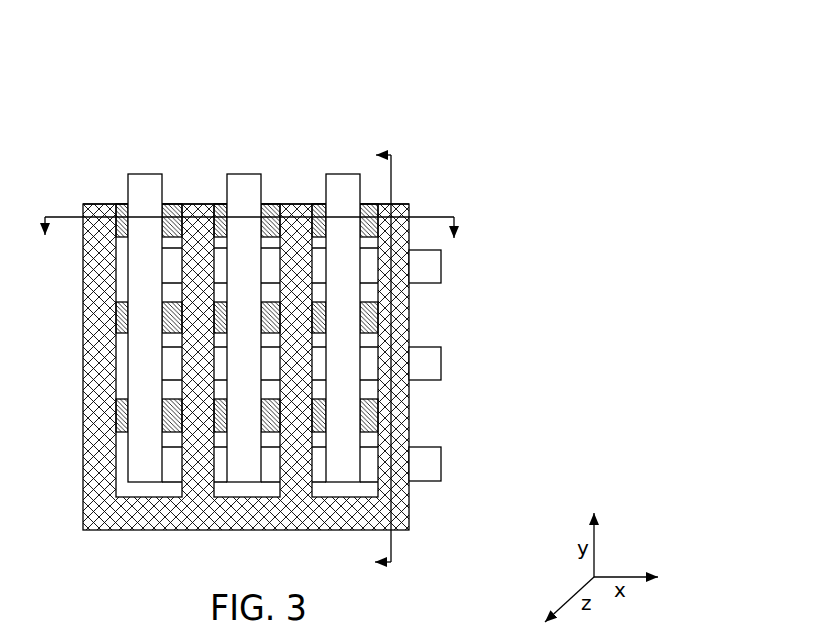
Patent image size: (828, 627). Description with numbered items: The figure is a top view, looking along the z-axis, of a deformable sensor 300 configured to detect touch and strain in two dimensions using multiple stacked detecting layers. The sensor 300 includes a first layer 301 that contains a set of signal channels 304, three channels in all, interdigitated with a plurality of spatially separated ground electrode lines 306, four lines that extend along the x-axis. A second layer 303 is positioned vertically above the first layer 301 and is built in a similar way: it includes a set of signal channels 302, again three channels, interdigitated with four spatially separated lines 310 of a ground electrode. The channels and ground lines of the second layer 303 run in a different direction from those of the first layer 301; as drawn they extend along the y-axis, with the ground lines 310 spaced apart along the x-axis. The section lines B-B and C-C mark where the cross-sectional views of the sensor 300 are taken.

The deformable sensor 300 is at (292, 297).
The first layer 301 is at (479, 161).
The set of signal channels 302 is at (364, 131).
The second layer 303 is at (91, 166).
The set of signal channels 304 is at (492, 236).
The ground electrode lines 306 is at (406, 178).
The lines of a ground electrode 310 is at (87, 198).